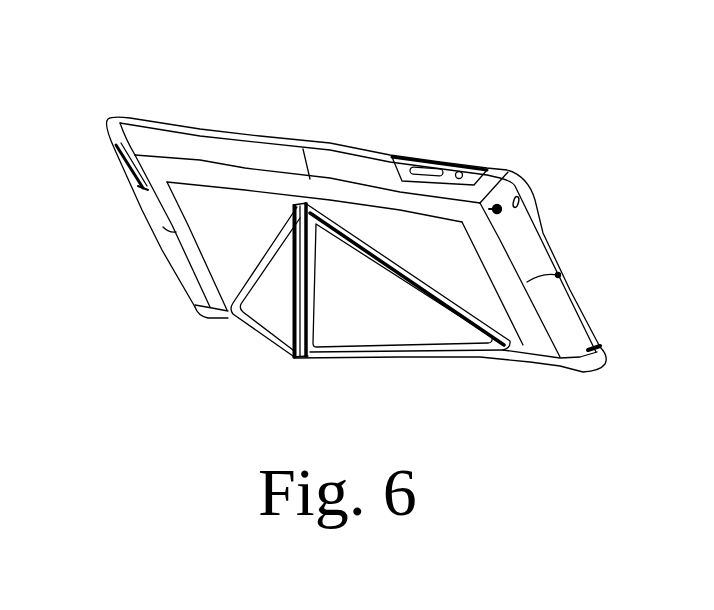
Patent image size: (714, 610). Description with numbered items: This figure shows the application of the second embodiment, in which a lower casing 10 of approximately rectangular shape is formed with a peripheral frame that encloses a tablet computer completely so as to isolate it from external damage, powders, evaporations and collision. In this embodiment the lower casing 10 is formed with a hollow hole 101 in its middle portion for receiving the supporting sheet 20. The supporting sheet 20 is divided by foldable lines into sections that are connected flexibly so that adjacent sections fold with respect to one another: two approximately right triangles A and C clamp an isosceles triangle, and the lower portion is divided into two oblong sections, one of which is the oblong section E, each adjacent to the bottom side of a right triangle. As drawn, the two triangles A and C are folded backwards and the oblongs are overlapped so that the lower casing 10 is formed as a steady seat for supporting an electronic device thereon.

The lower casing 10 is at (146, 131).
The supporting sheet 20 is at (347, 318).
The triangular section A is at (347, 337).
The triangular section C is at (262, 312).
The oblong section E is at (296, 358).
The hollow hole 101 is at (502, 323).